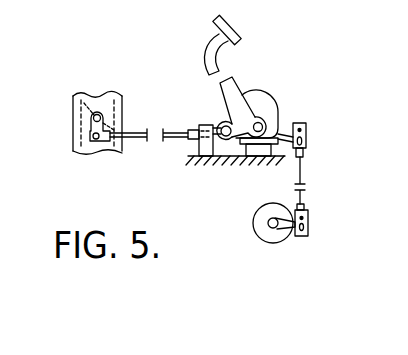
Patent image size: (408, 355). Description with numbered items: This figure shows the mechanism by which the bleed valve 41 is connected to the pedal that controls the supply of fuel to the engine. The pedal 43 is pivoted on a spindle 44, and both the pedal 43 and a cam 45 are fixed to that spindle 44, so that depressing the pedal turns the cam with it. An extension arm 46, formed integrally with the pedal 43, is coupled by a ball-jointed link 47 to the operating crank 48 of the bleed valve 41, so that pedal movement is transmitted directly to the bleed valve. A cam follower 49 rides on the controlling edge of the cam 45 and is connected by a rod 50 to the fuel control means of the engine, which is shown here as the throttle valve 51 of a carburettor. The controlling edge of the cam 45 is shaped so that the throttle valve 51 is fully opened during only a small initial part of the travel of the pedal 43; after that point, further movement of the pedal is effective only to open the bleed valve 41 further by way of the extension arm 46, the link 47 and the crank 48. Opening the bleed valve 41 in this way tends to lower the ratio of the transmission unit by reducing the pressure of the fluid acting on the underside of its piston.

The bleed valve 41 is at (255, 218).
The pedal 43 is at (227, 83).
The spindle 44 is at (263, 125).
The cam 45 is at (268, 102).
The extension arm 46 is at (289, 143).
The ball-jointed link 47 is at (301, 182).
The operating crank 48 is at (280, 242).
The cam follower 49 is at (223, 125).
The rod 50 is at (178, 140).
The throttle valve 51 is at (84, 103).